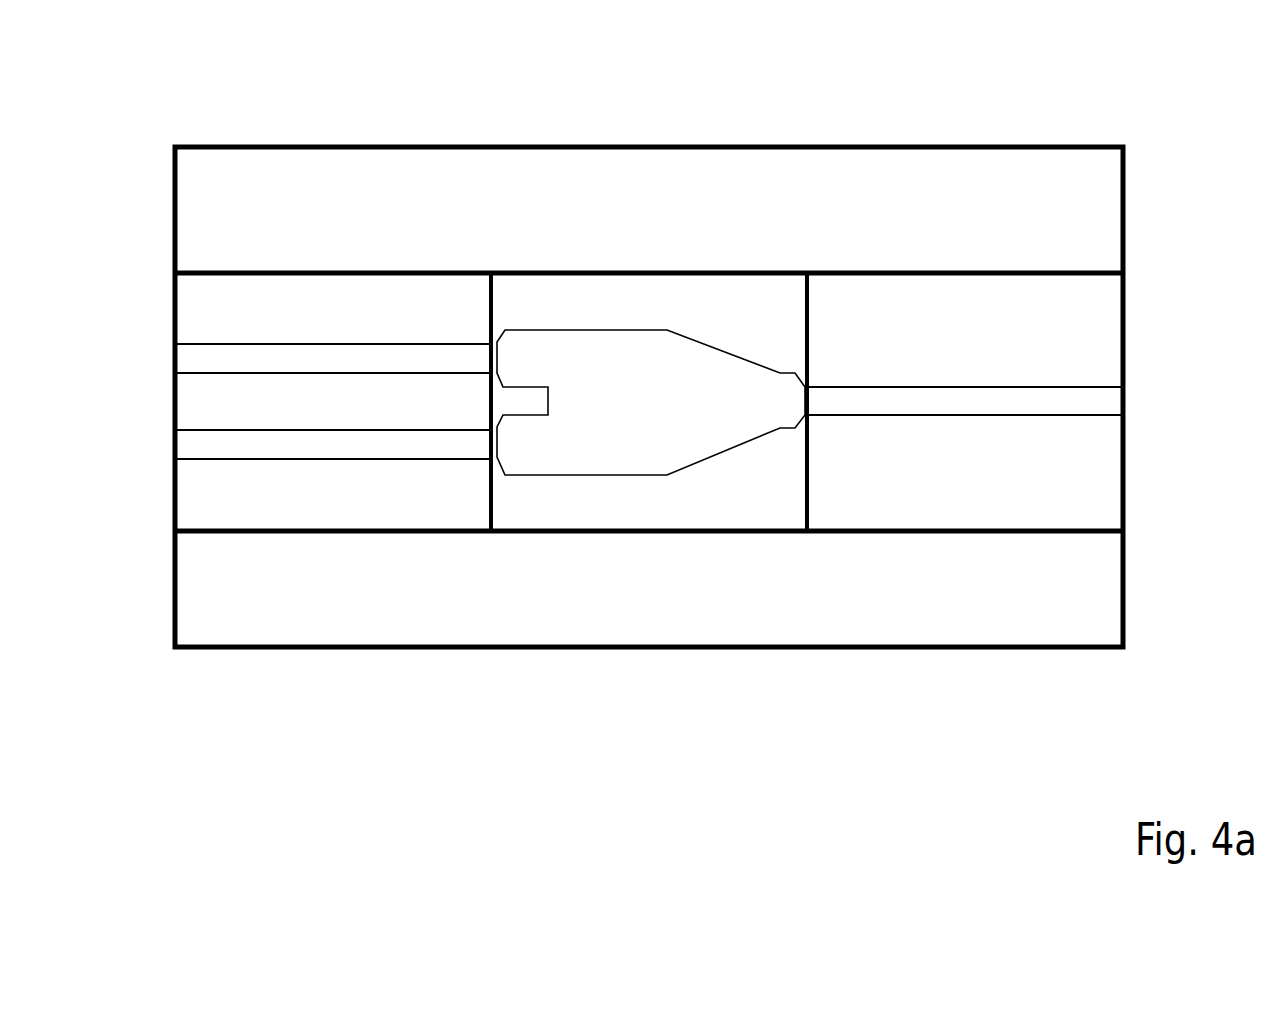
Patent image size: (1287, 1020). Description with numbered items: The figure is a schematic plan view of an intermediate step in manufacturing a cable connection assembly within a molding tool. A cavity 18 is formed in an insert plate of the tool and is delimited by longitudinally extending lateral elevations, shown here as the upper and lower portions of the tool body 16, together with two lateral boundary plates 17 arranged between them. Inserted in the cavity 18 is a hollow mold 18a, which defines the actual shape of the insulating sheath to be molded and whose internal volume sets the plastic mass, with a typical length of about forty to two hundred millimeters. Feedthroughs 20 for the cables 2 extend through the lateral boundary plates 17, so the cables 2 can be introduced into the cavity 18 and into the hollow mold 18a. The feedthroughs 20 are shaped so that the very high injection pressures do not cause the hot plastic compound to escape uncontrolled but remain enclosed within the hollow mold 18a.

The cable 2 is at (252, 357).
The housing 16 is at (510, 178).
The lateral boundary plate 17 is at (198, 315).
The cavity 18 is at (725, 510).
The hollow mold 18a is at (700, 360).
The feedthrough 20 is at (197, 385).